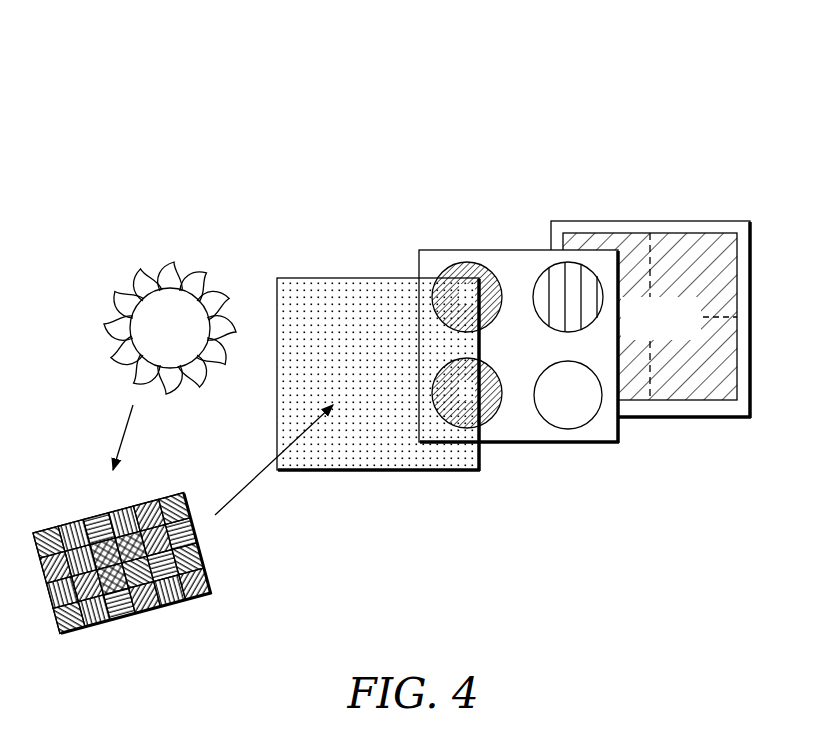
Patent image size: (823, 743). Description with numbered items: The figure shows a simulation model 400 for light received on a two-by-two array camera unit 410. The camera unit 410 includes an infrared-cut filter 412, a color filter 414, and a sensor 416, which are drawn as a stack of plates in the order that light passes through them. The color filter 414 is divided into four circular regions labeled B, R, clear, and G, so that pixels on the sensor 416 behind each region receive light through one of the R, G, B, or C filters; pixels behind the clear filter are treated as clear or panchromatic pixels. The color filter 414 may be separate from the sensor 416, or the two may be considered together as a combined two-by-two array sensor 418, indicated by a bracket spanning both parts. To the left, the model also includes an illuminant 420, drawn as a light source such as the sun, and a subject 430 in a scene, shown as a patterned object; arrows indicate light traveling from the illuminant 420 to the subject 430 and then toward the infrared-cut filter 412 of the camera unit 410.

The simulation model 400 is at (752, 46).
The 2×2 array camera unit 410 is at (752, 108).
The infrared-cut (IR-cut) filter 412 is at (280, 277).
The color filter 414 is at (420, 250).
The sensor 416 is at (737, 221).
The 2×2 array sensor 418 is at (752, 185).
The illuminant 420 is at (158, 287).
The subject 430 is at (70, 526).